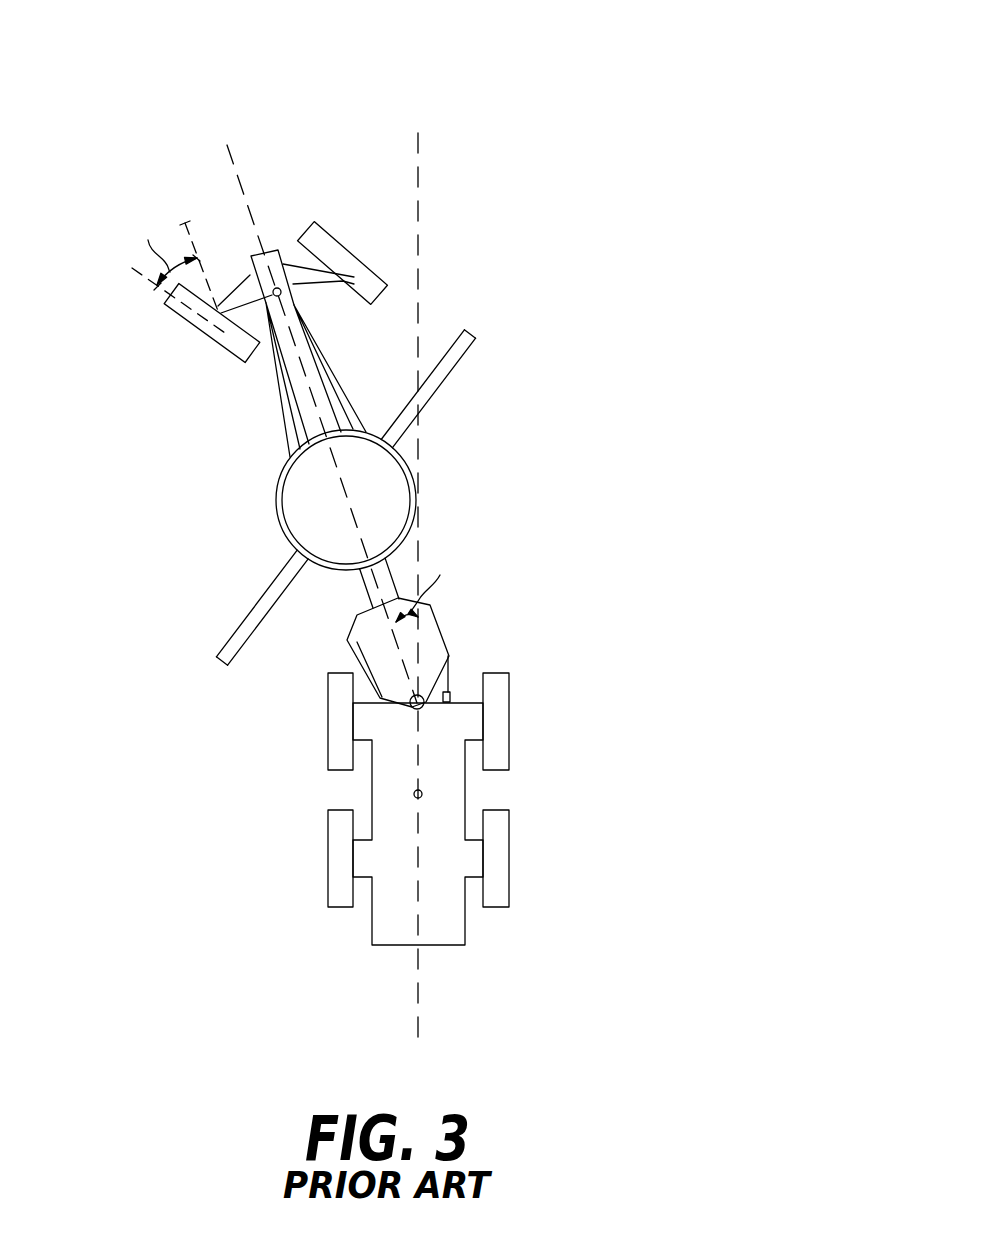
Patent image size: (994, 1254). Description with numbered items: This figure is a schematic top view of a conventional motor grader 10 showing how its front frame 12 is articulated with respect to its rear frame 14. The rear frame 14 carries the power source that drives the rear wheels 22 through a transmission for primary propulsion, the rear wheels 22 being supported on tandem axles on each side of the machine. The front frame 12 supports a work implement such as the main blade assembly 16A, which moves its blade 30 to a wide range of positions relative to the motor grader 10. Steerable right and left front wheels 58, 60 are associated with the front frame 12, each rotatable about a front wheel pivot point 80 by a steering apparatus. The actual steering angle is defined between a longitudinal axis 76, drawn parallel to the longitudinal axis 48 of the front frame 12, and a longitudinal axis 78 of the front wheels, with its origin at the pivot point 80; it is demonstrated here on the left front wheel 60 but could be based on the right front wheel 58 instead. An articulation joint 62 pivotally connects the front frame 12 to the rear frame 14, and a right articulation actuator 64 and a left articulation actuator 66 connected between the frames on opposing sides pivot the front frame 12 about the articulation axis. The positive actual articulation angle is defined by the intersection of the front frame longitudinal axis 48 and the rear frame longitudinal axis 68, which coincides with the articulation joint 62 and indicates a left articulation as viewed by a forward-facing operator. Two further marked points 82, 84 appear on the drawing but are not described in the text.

The motor grader 10 is at (572, 73).
The front frame 12 is at (322, 380).
The rear frame 14 is at (371, 918).
The main blade assembly 16A is at (317, 497).
The rear wheels 22 is at (328, 730).
The blade 30 is at (221, 652).
The longitudinal axis of front frame 48 is at (237, 175).
The right front wheel 58 is at (334, 236).
The left front wheel 60 is at (190, 322).
The articulation joint 62 is at (421, 709).
The right articulation actuator 64 is at (453, 698).
The left articulation actuator 66 is at (356, 640).
The longitudinal axis of rear frame 68 is at (418, 153).
The longitudinal axis parallel to front frame axis 76 is at (188, 226).
The longitudinal axis of front wheels 78 is at (147, 278).
The front wheel pivot point 80 is at (258, 283).
The vehicle center point 82 is at (420, 797).
The tie rod pivot 84 is at (274, 290).